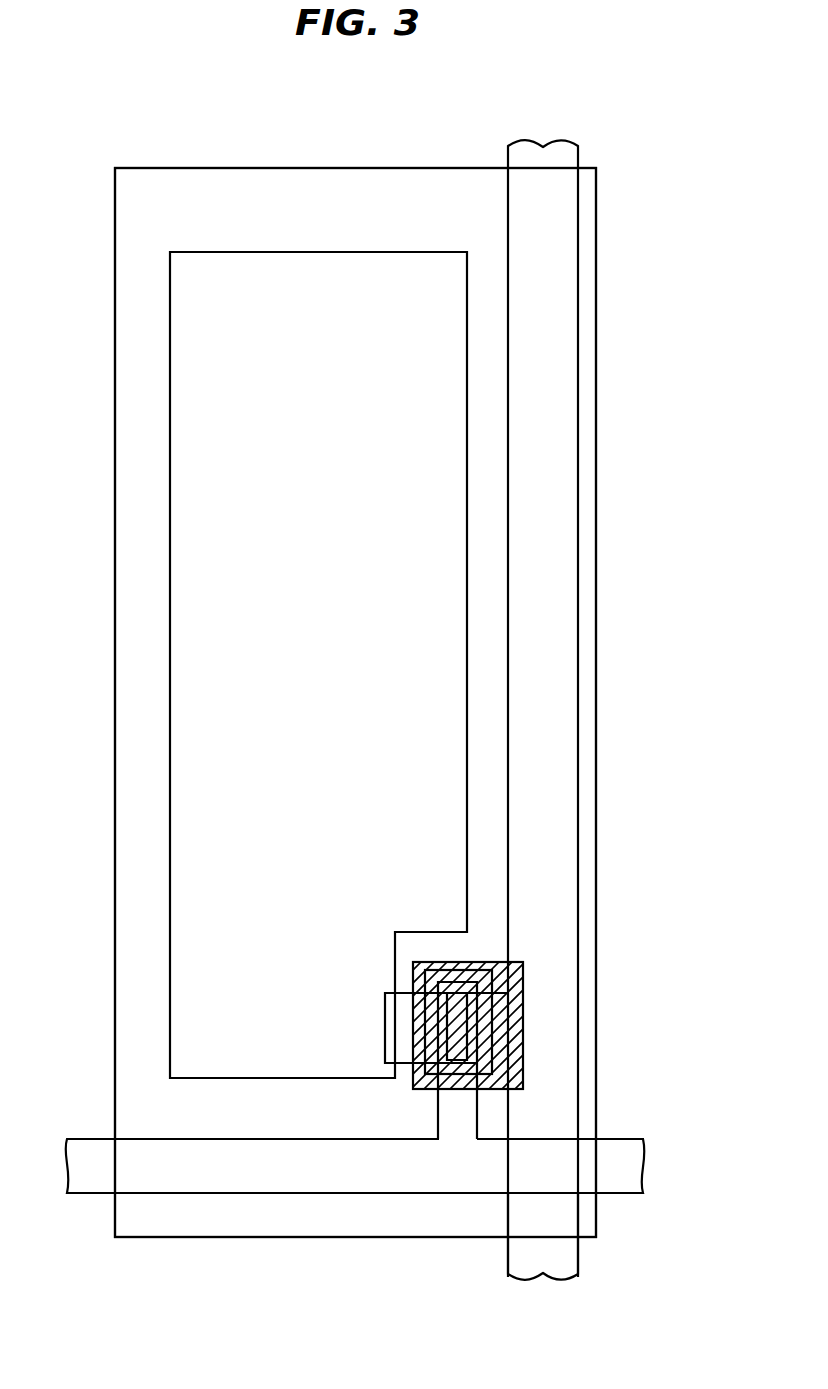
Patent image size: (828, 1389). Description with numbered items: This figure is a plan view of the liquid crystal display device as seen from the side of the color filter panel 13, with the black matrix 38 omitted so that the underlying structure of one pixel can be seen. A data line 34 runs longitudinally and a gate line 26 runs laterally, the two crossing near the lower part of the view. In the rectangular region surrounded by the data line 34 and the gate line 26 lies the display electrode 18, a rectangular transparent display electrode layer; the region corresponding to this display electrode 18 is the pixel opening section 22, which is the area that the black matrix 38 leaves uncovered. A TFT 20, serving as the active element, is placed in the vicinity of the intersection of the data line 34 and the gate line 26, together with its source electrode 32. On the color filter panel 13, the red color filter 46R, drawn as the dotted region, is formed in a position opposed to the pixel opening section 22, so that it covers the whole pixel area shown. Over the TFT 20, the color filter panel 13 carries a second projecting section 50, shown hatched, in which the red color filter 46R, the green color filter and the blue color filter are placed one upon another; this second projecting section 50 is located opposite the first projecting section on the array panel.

The color filter panel 13 is at (655, 565).
The display electrode 18 is at (170, 502).
The TFT 20 is at (455, 975).
The pixel opening section 22 is at (259, 590).
The gate line 26 is at (615, 1139).
The source electrode 32 is at (413, 993).
The data line 34 is at (578, 1255).
The black matrix 38 is at (597, 710).
The red color filter 46R is at (381, 183).
The second projecting section 50 is at (423, 1089).